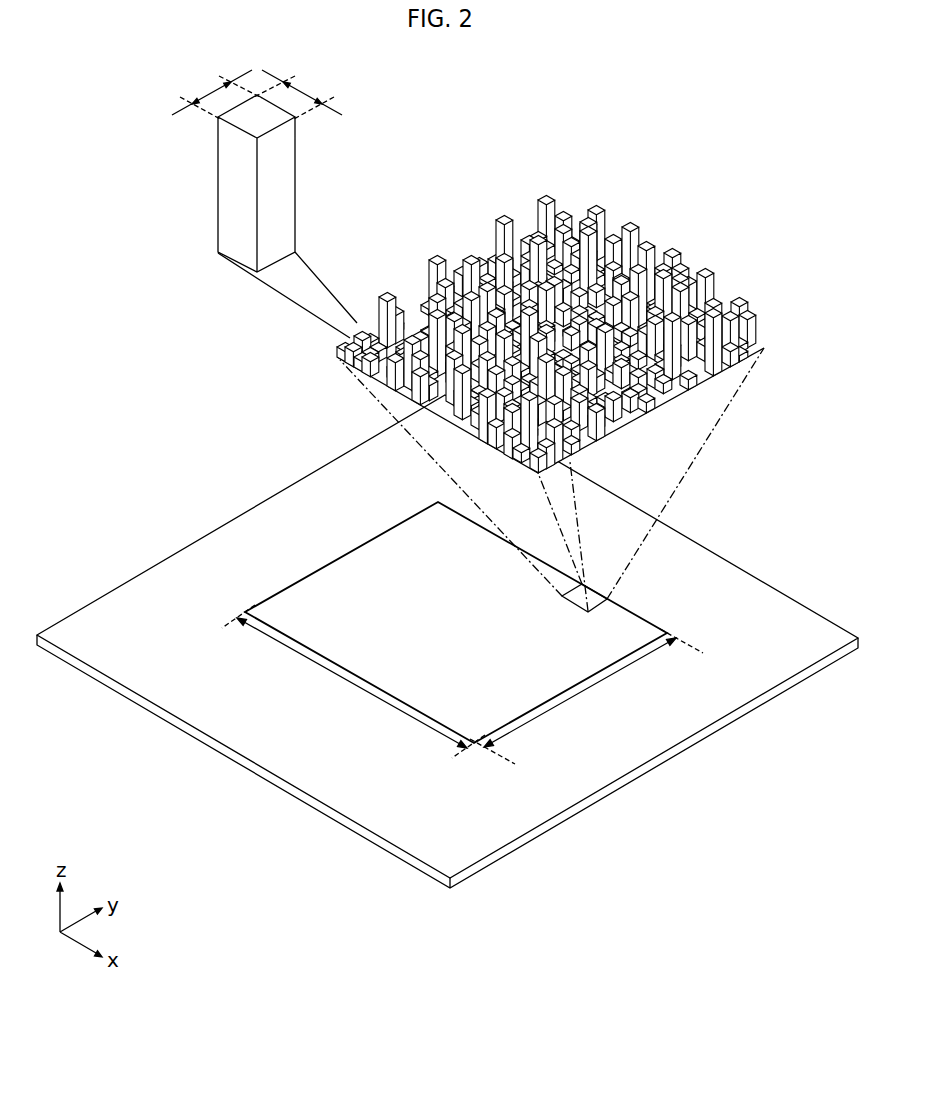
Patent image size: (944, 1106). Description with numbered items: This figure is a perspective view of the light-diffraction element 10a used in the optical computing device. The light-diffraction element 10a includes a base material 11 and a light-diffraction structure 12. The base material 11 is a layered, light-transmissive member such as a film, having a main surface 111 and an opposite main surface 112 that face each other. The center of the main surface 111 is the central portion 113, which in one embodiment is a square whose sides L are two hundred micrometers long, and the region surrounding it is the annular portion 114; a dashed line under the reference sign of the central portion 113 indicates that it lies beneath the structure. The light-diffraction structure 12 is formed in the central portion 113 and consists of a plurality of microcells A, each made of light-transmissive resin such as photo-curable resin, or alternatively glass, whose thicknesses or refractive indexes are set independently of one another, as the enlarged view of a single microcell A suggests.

The light-diffraction element 10a is at (703, 818).
The base material 11 is at (637, 772).
The main surface 111 is at (240, 516).
The main surface 112 is at (210, 746).
The central portion 113 is at (472, 634).
The annular portion 114 is at (443, 803).
The light-diffraction structure 12 is at (353, 544).
The microcell A is at (218, 173).